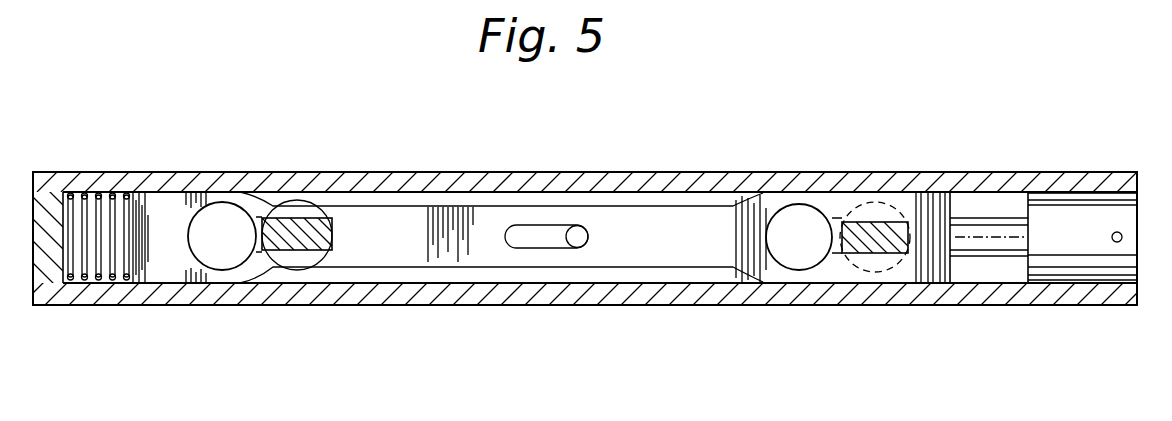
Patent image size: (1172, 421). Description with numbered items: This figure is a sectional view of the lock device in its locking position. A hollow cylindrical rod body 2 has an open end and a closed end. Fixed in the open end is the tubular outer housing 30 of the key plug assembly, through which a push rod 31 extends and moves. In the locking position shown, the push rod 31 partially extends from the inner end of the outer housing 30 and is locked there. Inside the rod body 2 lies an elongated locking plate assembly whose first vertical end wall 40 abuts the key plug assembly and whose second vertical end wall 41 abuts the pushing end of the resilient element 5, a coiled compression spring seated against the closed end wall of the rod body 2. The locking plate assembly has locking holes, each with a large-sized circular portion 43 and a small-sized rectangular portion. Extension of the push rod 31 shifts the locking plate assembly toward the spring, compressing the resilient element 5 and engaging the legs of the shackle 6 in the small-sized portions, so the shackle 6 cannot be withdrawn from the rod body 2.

The rod body 2 is at (1014, 174).
The resilient element 5 is at (85, 195).
The lock bar assembly 6 is at (305, 229).
The outer housing 30 is at (1078, 270).
The push rod 31 is at (986, 257).
The first vertical end wall 40 is at (957, 207).
The second vertical end wall 41 is at (120, 216).
The large-sized circular portion 43 is at (227, 215).